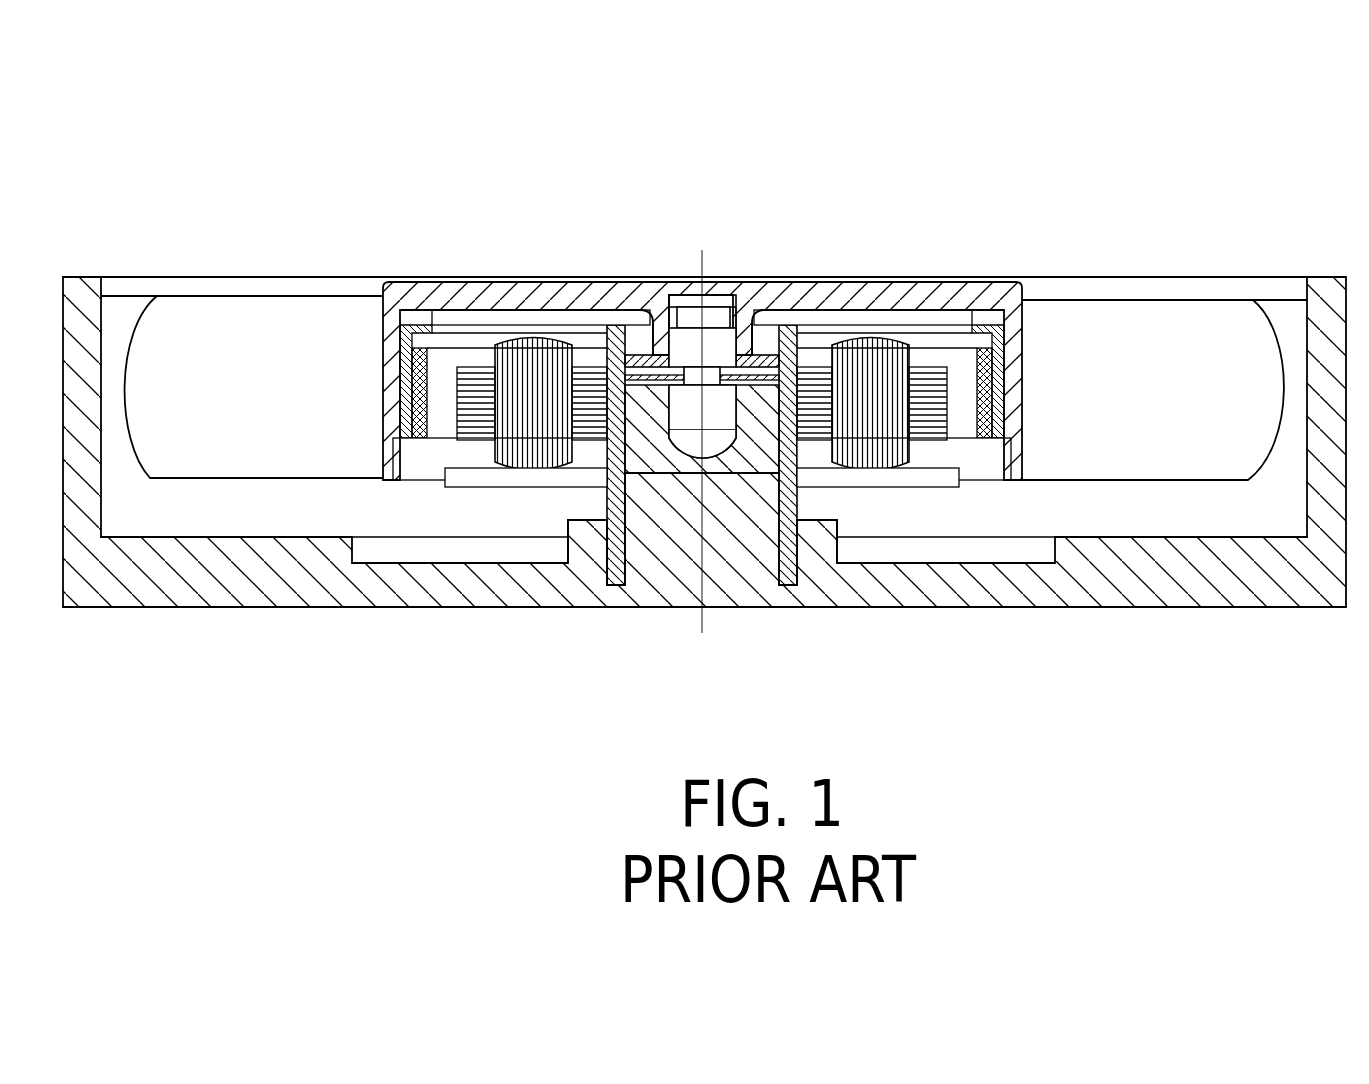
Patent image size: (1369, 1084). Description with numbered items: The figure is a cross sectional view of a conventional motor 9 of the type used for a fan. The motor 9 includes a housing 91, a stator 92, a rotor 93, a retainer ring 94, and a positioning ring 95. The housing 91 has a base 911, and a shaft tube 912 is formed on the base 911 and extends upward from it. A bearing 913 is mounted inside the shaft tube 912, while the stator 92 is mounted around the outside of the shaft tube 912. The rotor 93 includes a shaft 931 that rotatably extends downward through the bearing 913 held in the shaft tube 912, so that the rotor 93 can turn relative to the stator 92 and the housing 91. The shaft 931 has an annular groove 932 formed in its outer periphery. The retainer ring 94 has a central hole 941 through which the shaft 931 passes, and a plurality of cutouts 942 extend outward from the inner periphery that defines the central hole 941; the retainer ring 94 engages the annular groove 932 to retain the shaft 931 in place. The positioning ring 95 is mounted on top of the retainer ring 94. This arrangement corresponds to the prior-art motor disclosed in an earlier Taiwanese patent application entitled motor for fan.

The motor 9 is at (1277, 230).
The housing 91 is at (403, 607).
The base 911 is at (800, 503).
The shaft tube 912 is at (606, 502).
The bearing 913 is at (647, 457).
The stator 92 is at (960, 501).
The rotor 93 is at (942, 283).
The shaft 931 is at (690, 337).
The annular groove 932 is at (670, 328).
The retainer ring 94 is at (724, 352).
The central hole 941 is at (685, 380).
The cutouts 942 is at (728, 448).
The positioning ring 95 is at (765, 352).